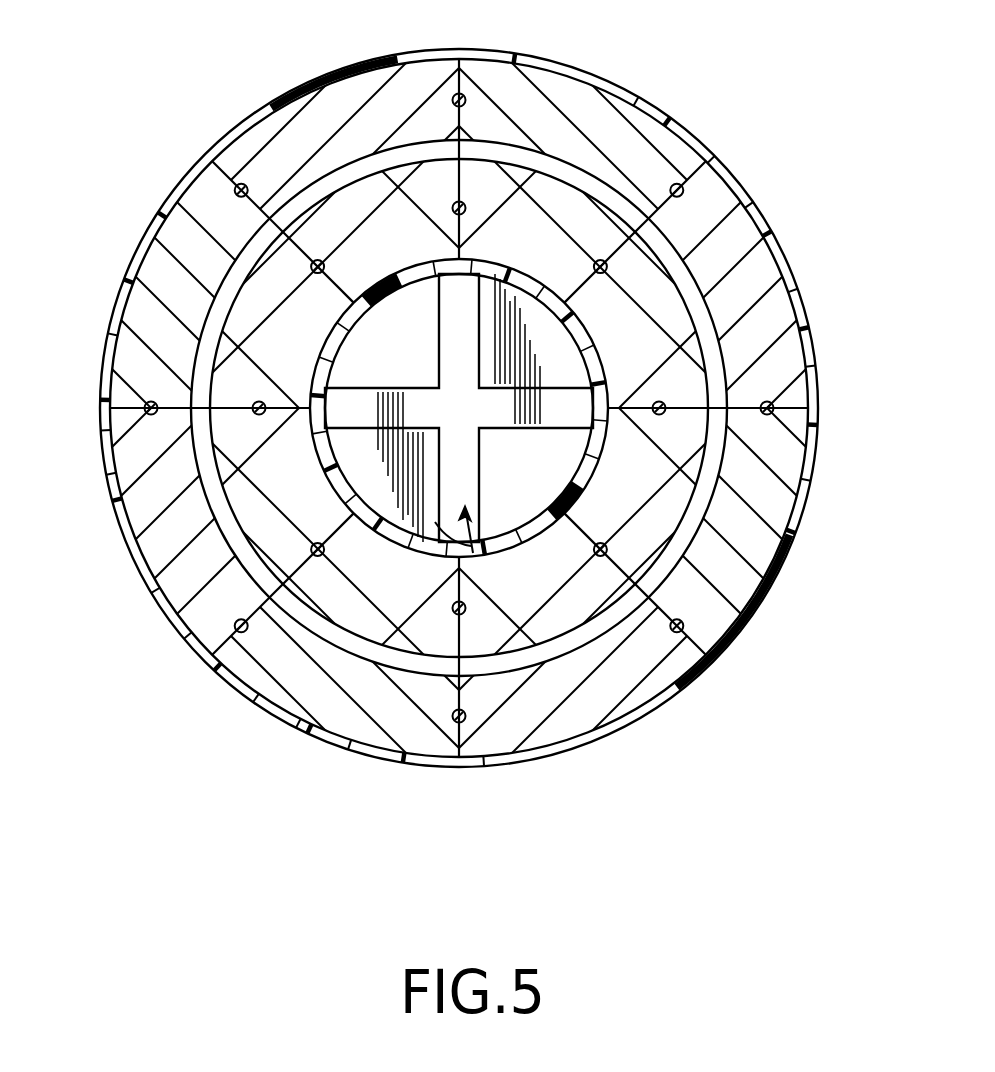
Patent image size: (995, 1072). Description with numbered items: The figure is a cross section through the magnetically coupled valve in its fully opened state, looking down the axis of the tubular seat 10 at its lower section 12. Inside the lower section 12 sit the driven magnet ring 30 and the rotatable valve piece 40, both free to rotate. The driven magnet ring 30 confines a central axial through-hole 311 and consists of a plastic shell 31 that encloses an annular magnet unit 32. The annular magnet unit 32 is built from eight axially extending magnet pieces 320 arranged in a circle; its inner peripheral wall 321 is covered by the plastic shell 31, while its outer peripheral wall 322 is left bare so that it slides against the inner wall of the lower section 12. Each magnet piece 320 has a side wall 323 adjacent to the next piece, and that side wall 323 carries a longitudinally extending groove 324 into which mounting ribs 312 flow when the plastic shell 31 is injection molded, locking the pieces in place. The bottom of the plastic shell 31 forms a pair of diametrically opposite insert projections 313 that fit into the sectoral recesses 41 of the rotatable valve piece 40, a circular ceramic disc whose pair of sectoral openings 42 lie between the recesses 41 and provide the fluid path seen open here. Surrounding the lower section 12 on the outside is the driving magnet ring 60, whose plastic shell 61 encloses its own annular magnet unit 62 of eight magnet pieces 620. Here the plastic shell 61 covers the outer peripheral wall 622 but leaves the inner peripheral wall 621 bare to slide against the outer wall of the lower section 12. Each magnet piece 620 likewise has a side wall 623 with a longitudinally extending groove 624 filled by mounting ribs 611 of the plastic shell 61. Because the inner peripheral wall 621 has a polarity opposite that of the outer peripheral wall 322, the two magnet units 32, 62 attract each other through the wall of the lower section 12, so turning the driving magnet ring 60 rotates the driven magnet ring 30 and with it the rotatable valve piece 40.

The tubular seat 10 is at (672, 543).
The lower section 12 is at (720, 457).
The driven magnet ring 30 is at (226, 442).
The plastic shell 31 is at (265, 707).
The axial through-hole 311 is at (348, 522).
The insert projections 312 is at (272, 145).
The insert projections 313 is at (703, 371).
The annular magnet unit 32 is at (163, 580).
The magnet pieces 320 is at (228, 347).
The inner peripheral wall 321 is at (140, 415).
The outer peripheral wall 322 is at (200, 387).
The side wall 323 is at (150, 402).
The longitudinally extending groove 324 is at (305, 270).
The rotatable valve piece 40 is at (482, 553).
The sectoral recesses 41 is at (473, 300).
The sectoral openings 42 is at (378, 315).
The driving magnet ring 60 is at (572, 64).
The plastic shell 61 is at (680, 137).
The mounting ribs 611 is at (790, 379).
The annular magnet unit 62 is at (722, 215).
The magnet pieces 620 is at (385, 90).
The inner peripheral wall 621 is at (790, 315).
The outer peripheral wall 622 is at (762, 262).
The side wall 623 is at (707, 183).
The longitudinally extending groove 624 is at (672, 184).